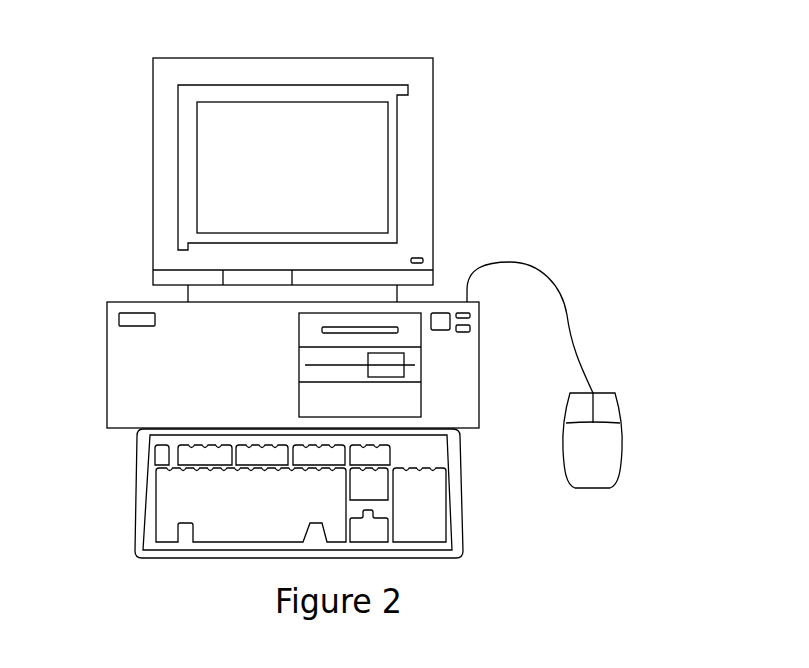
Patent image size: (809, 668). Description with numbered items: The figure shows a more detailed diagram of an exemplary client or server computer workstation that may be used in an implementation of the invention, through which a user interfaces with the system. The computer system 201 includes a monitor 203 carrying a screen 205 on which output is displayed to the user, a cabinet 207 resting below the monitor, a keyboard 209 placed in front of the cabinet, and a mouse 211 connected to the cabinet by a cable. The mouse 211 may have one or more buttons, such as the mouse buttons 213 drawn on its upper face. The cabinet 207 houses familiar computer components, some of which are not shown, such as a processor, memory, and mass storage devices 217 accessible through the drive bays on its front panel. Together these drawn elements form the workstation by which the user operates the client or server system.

The computer system 201 is at (449, 40).
The monitor 203 is at (433, 145).
The screen 205 is at (213, 157).
The cabinet 207 is at (133, 303).
The keyboard 209 is at (178, 560).
The mouse 211 is at (593, 477).
The mouse buttons 213 is at (583, 412).
The mass storage devices 217 is at (413, 318).